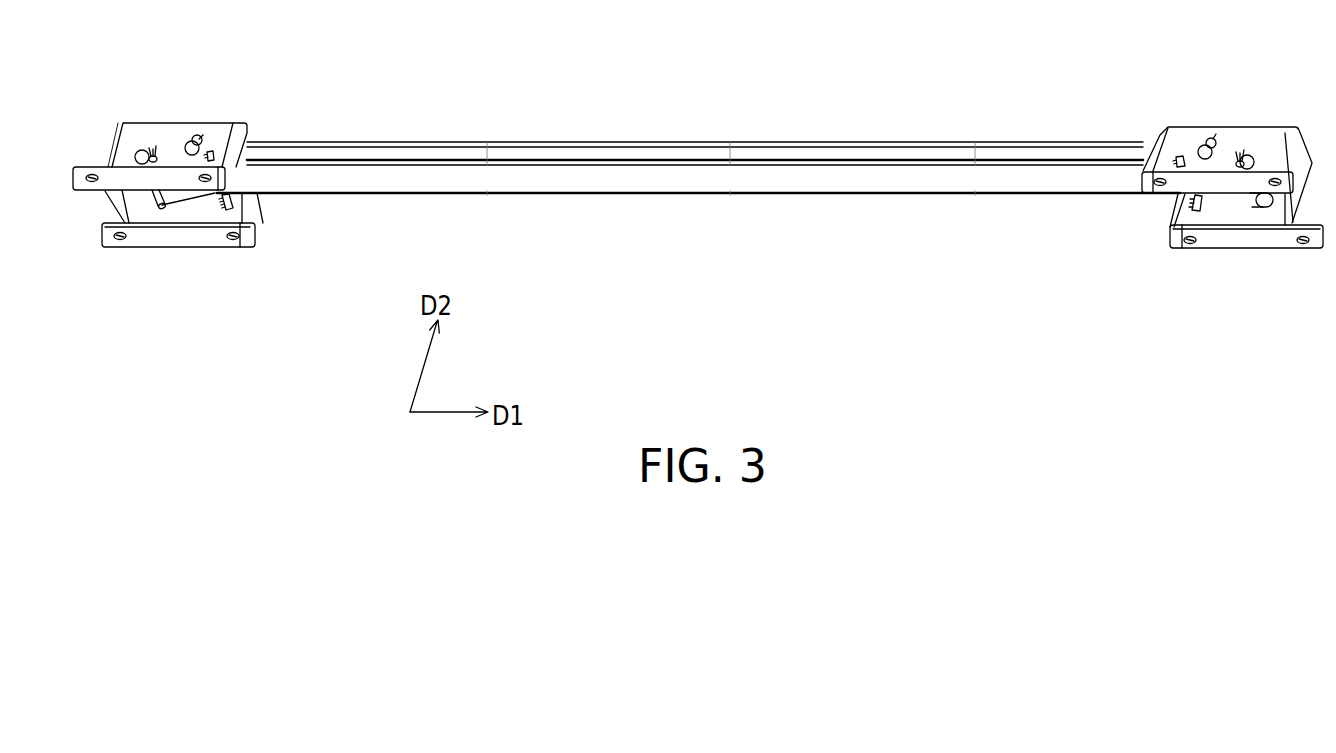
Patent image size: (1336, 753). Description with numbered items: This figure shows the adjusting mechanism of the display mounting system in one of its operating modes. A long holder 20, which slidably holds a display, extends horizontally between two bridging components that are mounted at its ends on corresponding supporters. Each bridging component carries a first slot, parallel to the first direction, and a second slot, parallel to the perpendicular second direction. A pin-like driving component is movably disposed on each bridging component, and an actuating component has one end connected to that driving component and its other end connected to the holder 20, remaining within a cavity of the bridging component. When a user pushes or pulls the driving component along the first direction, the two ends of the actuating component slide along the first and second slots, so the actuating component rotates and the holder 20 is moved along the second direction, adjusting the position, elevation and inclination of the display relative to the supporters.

The holder 20 is at (710, 142).